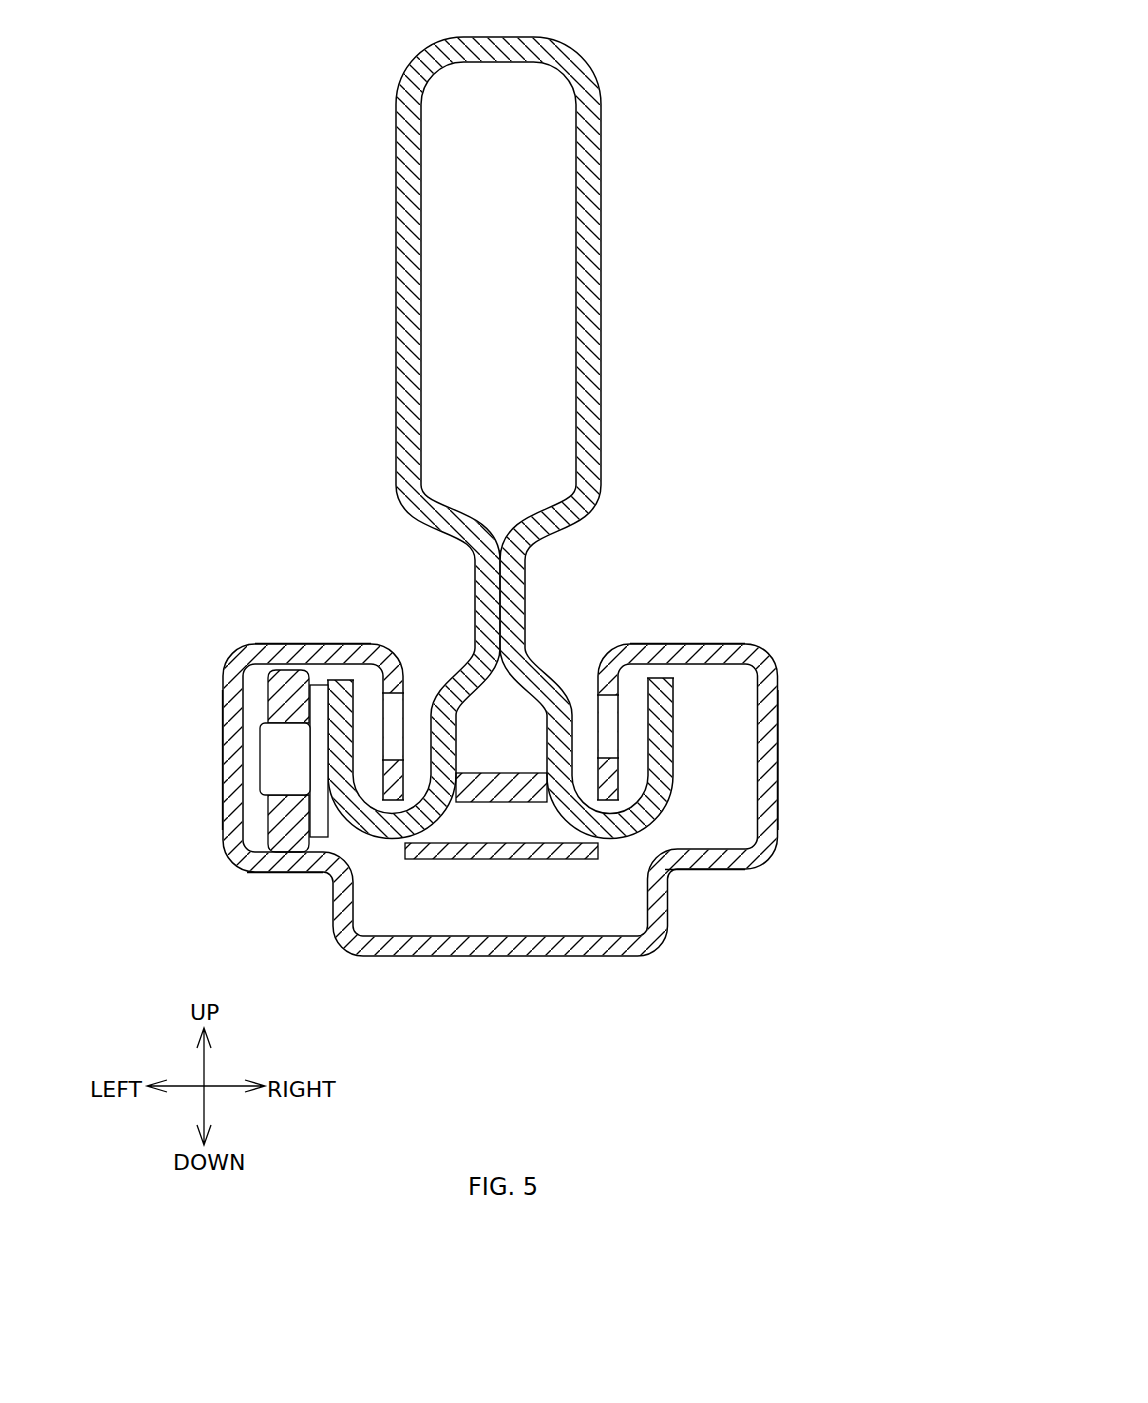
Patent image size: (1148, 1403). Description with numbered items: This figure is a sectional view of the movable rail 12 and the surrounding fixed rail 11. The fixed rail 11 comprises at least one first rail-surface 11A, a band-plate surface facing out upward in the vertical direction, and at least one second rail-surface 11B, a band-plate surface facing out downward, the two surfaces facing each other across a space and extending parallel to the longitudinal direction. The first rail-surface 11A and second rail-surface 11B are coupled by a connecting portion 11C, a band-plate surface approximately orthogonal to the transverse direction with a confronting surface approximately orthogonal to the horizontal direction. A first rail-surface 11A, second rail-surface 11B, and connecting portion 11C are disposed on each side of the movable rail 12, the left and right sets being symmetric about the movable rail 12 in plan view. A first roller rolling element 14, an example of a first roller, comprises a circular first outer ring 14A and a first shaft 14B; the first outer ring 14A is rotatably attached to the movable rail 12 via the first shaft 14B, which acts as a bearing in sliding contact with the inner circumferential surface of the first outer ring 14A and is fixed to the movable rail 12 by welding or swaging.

The fixed rail 11 is at (567, 957).
The first rail-surface 11A is at (267, 855).
The second rail-surface 11B is at (337, 665).
The connecting portion 11C is at (232, 773).
The movable rail 12 is at (396, 437).
The first roller rolling element 14 is at (253, 738).
The first outer ring 14A is at (282, 683).
The first shaft 14B is at (288, 783).